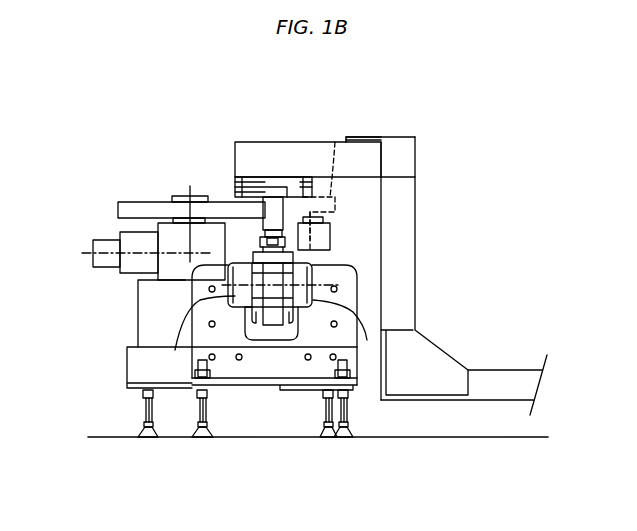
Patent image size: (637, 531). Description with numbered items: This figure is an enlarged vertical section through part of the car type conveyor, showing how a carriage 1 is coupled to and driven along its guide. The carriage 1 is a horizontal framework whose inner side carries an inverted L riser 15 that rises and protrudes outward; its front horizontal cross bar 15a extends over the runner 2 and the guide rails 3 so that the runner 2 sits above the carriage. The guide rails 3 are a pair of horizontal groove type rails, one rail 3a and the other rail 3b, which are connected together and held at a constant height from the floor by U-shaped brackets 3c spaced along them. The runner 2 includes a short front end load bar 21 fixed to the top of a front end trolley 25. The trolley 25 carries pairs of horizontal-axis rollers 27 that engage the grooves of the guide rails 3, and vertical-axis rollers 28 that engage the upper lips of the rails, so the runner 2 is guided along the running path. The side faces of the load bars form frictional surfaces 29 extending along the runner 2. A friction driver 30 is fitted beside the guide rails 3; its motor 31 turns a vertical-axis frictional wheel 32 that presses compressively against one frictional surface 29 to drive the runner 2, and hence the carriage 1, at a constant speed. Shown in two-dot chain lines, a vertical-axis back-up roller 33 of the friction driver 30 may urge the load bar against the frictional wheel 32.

The carriage 1 is at (518, 362).
The runner 2 is at (286, 242).
The guide rails 3 is at (318, 280).
The guide rail 3a is at (175, 350).
The guide rail 3b is at (367, 340).
The U-shaped bracket 3c is at (230, 330).
The riser 15 is at (417, 152).
The front horizontal cross bar 15a is at (303, 160).
The front end load bar 21 is at (268, 207).
The front end trolley 25 is at (272, 292).
The horizontal-axis roller 27 is at (312, 289).
The vertical-axis roller 28 is at (260, 237).
The frictional surface 29 is at (250, 185).
The friction driver 30 is at (138, 190).
The motor 31 is at (135, 265).
The frictional wheel 32 is at (124, 208).
The back-up roller 33 is at (368, 134).